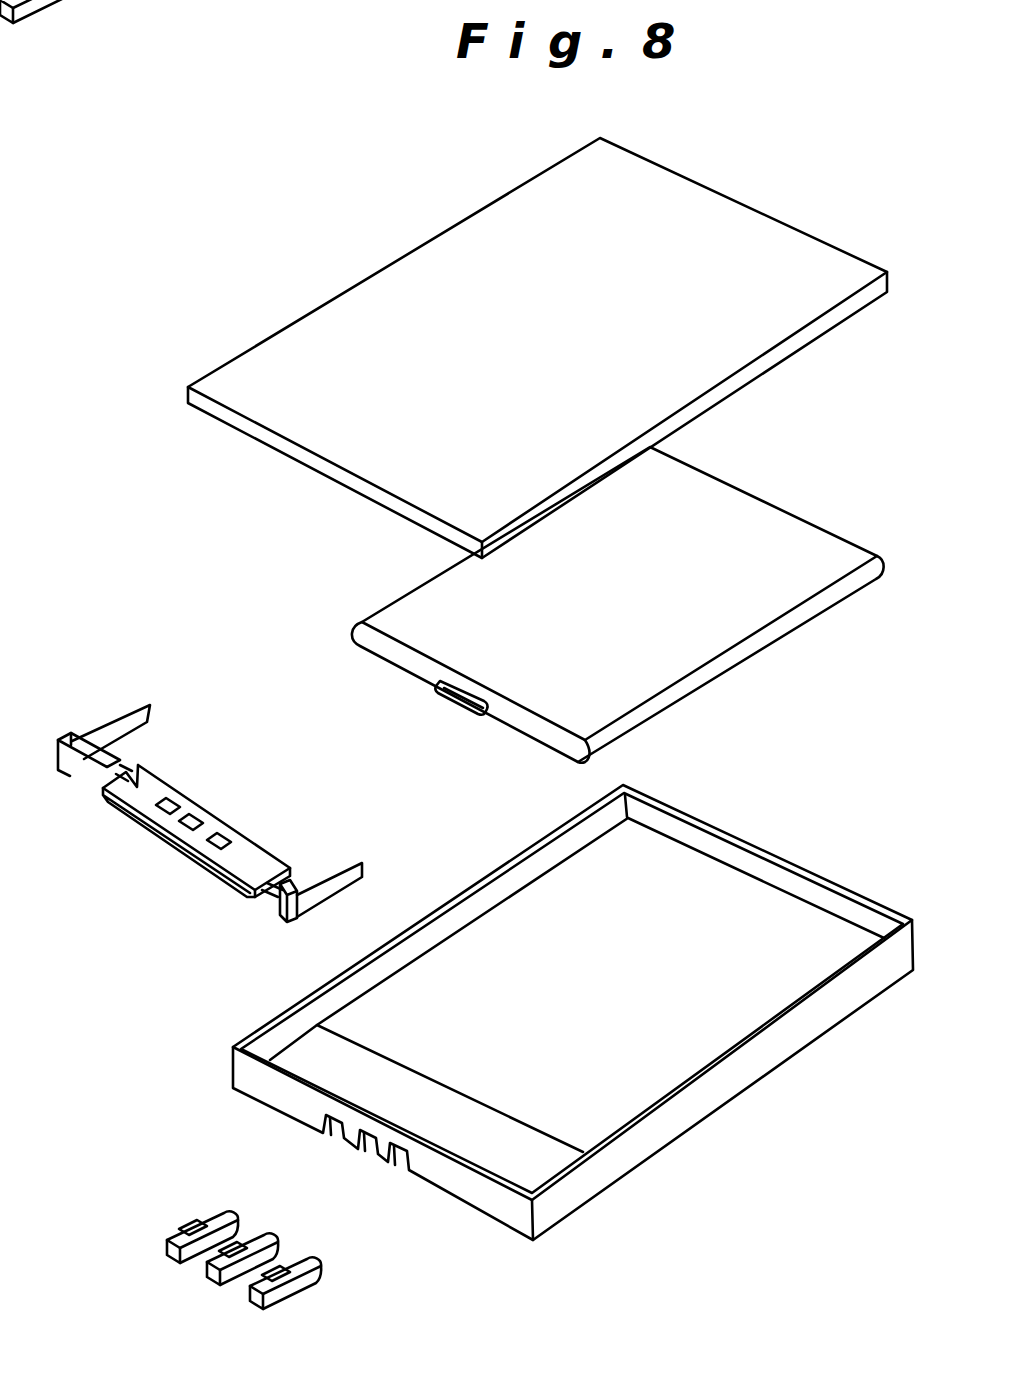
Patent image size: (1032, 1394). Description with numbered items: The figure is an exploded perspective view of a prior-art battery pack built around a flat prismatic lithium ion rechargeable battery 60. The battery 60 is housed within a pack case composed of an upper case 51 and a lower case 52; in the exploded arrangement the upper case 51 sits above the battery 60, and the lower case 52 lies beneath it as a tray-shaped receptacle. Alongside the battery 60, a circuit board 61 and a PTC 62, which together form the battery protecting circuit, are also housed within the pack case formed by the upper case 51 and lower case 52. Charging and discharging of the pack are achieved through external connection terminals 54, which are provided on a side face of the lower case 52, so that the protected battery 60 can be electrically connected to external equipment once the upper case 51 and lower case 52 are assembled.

The upper case 51 is at (812, 327).
The lithium ion rechargeable battery 60 is at (772, 620).
The lower case 52 is at (728, 1098).
The external connection terminals 54 is at (292, 1293).
The circuit board 61 is at (200, 840).
The PTC 62 is at (92, 763).